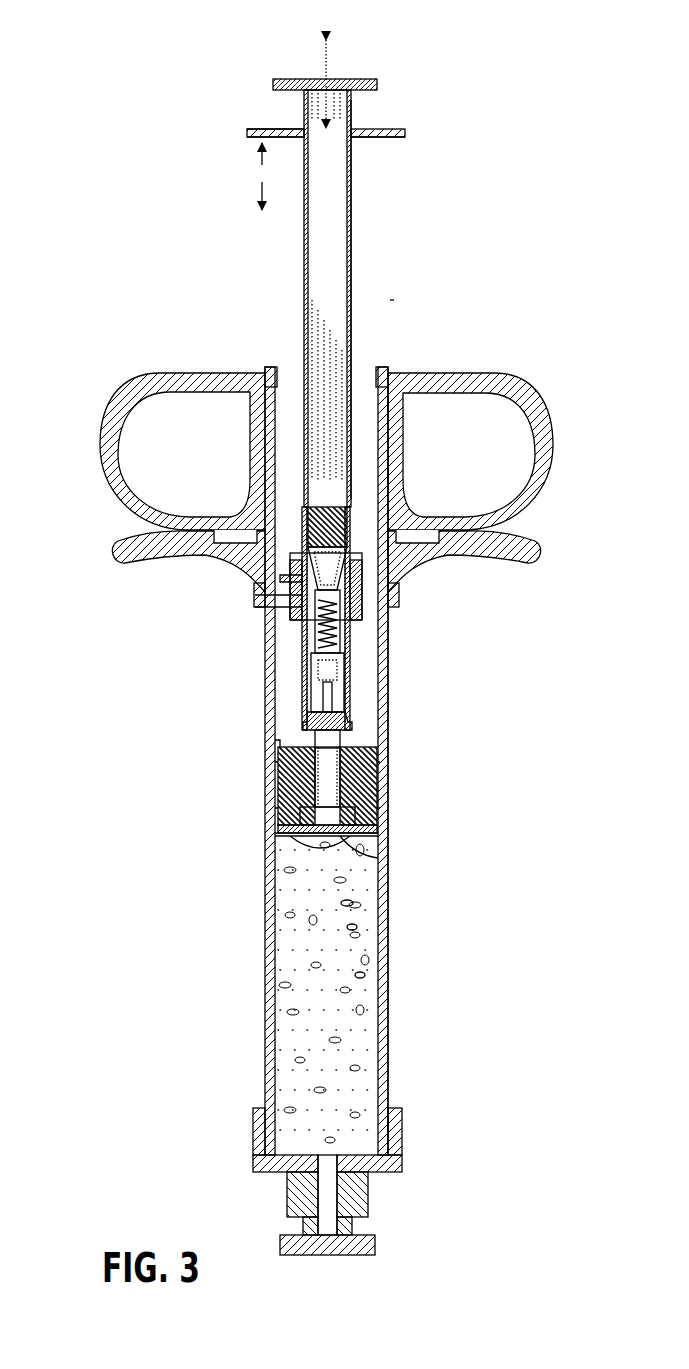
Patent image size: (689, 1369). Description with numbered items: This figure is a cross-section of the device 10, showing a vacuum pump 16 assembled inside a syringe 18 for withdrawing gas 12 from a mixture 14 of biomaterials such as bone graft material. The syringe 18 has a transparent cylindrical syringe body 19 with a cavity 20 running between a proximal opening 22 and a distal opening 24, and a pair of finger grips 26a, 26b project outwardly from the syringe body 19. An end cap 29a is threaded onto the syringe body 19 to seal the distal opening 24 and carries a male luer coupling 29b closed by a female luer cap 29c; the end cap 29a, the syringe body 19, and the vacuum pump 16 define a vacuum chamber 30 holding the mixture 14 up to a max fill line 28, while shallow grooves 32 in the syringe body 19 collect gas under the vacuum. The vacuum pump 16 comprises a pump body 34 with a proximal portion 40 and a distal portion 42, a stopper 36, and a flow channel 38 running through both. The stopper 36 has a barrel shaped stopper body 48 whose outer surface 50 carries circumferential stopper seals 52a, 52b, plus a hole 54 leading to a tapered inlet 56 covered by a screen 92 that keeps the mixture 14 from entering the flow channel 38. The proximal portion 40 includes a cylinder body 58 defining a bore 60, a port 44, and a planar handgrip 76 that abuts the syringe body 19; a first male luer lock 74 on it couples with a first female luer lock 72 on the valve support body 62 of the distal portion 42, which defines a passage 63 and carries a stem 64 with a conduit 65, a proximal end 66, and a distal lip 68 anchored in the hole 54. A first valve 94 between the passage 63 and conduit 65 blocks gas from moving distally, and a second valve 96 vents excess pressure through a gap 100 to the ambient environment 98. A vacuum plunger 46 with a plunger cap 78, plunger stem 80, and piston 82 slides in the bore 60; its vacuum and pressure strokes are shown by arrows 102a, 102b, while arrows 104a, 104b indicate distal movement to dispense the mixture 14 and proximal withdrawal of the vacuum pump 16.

The device 10 is at (90, 53).
The gas 12 is at (360, 928).
The mixture of biomaterials 14 is at (365, 974).
The vacuum pump 16 is at (184, 112).
The syringe 18 is at (112, 418).
The syringe body 19 is at (268, 931).
The cavity 20 is at (290, 374).
The proximal opening 22 is at (372, 372).
The distal opening 24 is at (375, 1176).
The finger grip 26a is at (178, 361).
The finger grip 26b is at (466, 373).
The max fill line 28 is at (280, 833).
The end cap 29a is at (256, 1132).
The male luer coupling 29b is at (290, 1188).
The female luer cap 29c is at (320, 1256).
The vacuum chamber 30 is at (328, 992).
The grooves 32 is at (389, 1005).
The pump body 34 is at (300, 545).
The stopper 36 is at (300, 731).
The flow channel 38 is at (350, 180).
The proximal portion 40 is at (302, 273).
The distal portion 42 is at (300, 649).
The port 44 is at (352, 130).
The vacuum plunger 46 is at (284, 80).
The stopper body 48 is at (390, 776).
The outer surface 50 is at (280, 786).
The stopper seal 52a is at (278, 771).
The stopper seal 52b is at (278, 809).
The hole 54 is at (287, 749).
The inlet 56 is at (390, 821).
The cylinder body 58 is at (352, 240).
The bore 60 is at (396, 579).
The valve support body 62 is at (388, 646).
The passage 63 is at (390, 663).
The stem 64 is at (392, 755).
The conduit 65 is at (392, 726).
The proximal end 66 is at (310, 691).
The distal lip 68 is at (290, 851).
The first female luer lock 72 is at (292, 601).
The first male luer lock 74 is at (285, 581).
The handgrip 76 is at (250, 133).
The plunger cap 78 is at (300, 79).
The plunger stem 80 is at (304, 108).
The piston 82 is at (320, 505).
The screen 92 is at (378, 856).
The first valve 94 is at (392, 707).
The second valve 96 is at (390, 671).
The ambient environment 98 is at (415, 299).
The gap 100 is at (395, 686).
The arrow 102a is at (335, 53).
The arrow 102b is at (345, 109).
The arrow 104a is at (258, 192).
The arrow 104b is at (258, 162).